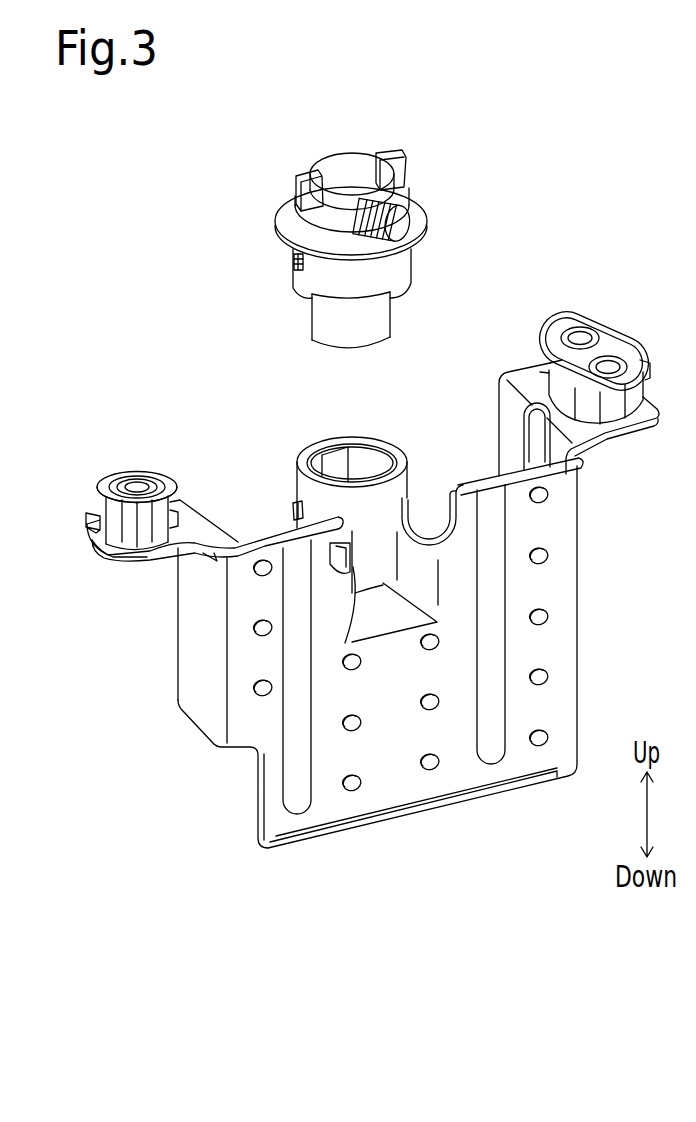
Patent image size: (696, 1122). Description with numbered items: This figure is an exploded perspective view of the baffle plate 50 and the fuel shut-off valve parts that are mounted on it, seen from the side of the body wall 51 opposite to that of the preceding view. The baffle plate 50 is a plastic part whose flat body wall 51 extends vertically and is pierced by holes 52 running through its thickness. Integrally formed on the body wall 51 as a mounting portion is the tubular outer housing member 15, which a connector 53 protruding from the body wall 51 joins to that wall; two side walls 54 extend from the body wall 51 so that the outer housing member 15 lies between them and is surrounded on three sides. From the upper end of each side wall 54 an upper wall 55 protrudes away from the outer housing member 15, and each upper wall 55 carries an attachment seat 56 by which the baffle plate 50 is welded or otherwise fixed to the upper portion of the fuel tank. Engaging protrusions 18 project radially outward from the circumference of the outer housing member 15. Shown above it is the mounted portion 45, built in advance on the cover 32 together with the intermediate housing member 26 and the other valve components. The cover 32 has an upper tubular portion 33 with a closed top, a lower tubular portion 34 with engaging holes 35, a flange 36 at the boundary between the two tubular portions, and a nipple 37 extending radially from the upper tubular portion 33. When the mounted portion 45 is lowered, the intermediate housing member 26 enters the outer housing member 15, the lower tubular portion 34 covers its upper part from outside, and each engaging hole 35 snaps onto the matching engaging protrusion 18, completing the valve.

The outer housing member 15 is at (403, 483).
The engaging protrusion 18 is at (296, 513).
The intermediate housing member 26 is at (317, 307).
The cover 32 is at (356, 162).
The upper tubular portion 33 is at (344, 160).
The lower tubular portion 34 is at (409, 257).
The engaging hole 35 is at (295, 267).
The flange 36 is at (292, 223).
The nipple 37 is at (413, 213).
The mounted portion 45 is at (241, 191).
The baffle plate 50 is at (592, 658).
The body wall 51 is at (483, 777).
The holes 52 is at (260, 573).
The connector 53 is at (383, 610).
The side wall 54 is at (178, 663).
The upper wall 55 is at (183, 517).
The attachment seat 56 is at (107, 477).